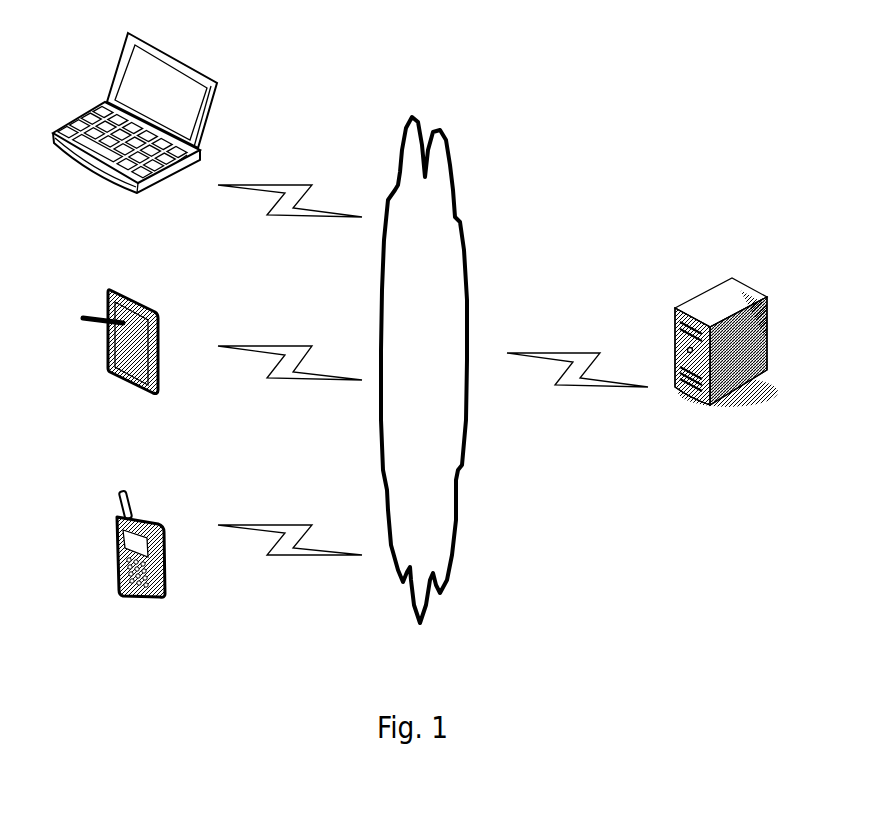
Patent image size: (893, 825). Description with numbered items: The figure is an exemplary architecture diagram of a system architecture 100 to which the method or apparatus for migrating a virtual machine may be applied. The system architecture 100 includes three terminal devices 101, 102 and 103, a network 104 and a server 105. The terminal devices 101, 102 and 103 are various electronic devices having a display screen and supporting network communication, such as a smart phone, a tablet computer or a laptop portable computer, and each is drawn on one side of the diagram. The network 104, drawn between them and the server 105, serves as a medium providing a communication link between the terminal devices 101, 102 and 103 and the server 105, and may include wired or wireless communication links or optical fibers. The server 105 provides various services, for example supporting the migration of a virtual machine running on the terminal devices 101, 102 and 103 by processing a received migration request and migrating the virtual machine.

The system architecture 100 is at (672, 23).
The terminal device 101 is at (141, 566).
The terminal device 102 is at (120, 362).
The terminal device 103 is at (135, 133).
The network 104 is at (424, 370).
The server 105 is at (726, 365).